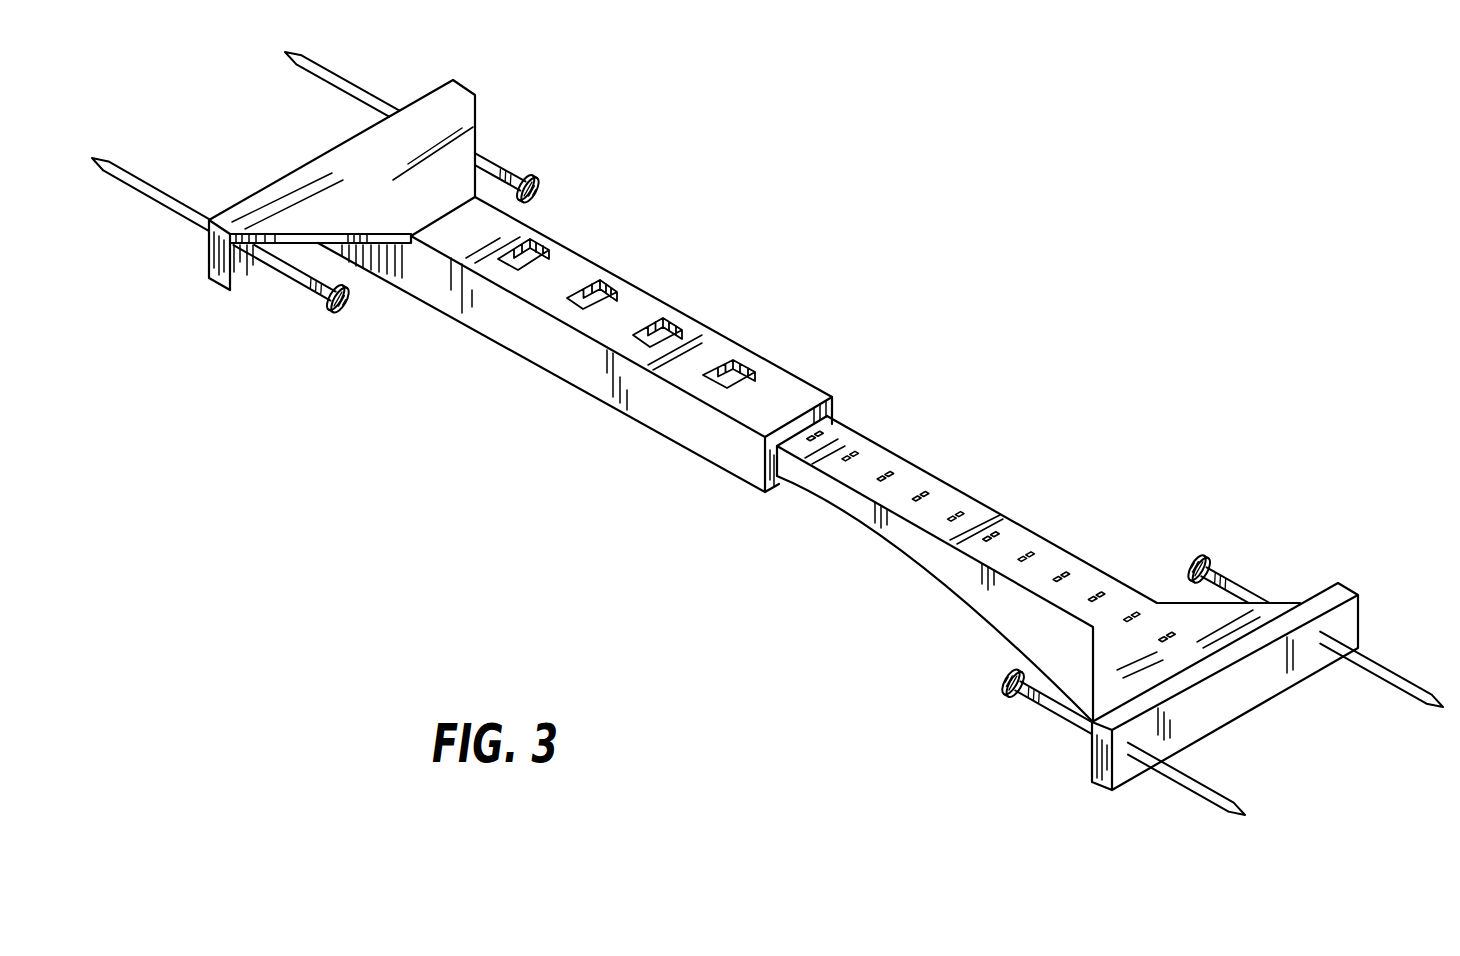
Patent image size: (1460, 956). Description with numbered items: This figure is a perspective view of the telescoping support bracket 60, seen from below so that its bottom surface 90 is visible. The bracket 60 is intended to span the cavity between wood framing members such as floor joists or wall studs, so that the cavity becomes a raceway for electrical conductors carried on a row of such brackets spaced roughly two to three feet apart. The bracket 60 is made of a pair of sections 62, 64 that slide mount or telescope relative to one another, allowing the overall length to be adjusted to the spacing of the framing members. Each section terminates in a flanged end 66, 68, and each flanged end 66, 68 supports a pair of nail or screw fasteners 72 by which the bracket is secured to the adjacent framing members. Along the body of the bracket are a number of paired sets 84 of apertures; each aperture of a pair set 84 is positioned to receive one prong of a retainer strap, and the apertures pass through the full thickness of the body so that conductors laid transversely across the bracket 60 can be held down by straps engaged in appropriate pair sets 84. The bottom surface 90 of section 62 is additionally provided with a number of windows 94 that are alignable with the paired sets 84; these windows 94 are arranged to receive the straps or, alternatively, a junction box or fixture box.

The telescoping support bracket 60 is at (877, 244).
The section 62 is at (575, 336).
The section 64 is at (1038, 569).
The flanged end 66 is at (453, 80).
The flanged end 68 is at (1363, 618).
The nail or screw fasteners 72 is at (196, 205).
The paired sets of apertures 84 is at (929, 493).
The bottom surface 90 is at (537, 245).
The windows 94 is at (601, 291).